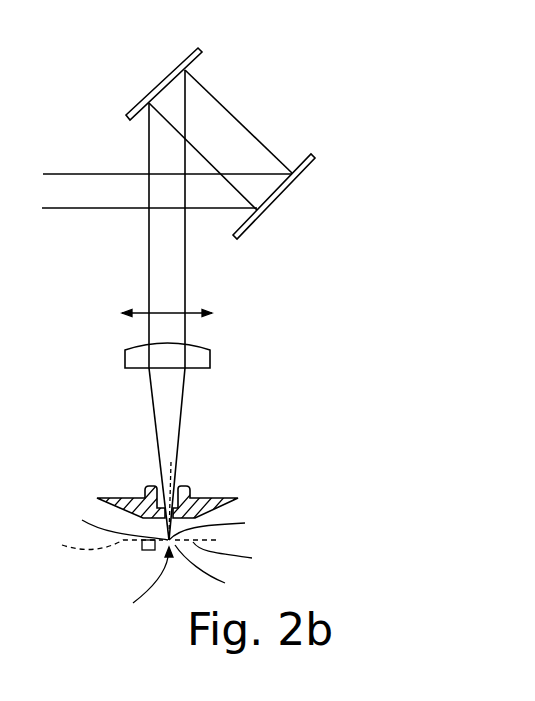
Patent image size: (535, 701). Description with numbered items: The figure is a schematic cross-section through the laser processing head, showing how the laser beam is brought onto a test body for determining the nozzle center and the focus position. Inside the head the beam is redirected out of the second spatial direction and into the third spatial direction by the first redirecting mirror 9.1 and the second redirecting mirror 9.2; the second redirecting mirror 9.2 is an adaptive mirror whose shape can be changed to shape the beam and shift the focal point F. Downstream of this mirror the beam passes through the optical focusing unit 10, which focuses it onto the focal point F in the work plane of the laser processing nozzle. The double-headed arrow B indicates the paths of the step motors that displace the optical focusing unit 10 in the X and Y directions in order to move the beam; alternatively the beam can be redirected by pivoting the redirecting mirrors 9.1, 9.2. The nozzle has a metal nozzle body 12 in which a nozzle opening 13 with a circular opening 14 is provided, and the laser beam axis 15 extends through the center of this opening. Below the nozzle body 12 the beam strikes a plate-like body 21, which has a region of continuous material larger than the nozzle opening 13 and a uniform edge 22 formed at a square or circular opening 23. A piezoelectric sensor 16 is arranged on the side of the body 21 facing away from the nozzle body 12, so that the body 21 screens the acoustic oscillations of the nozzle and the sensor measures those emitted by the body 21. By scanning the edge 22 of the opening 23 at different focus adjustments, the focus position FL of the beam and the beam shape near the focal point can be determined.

The second redirecting mirror 9.2 is at (170, 75).
The first redirecting mirror 9.1 is at (272, 207).
The double-headed arrow B is at (168, 313).
The optical focusing unit 10 is at (130, 357).
The nozzle opening 13 is at (162, 486).
The laser beam axis 15 is at (176, 474).
The nozzle body 12 is at (217, 498).
The focal point F is at (117, 520).
The focus position FL is at (125, 546).
The circular opening 14 is at (223, 524).
The plate-like body 21 is at (240, 557).
The uniform edge 22 is at (217, 574).
The piezoelectric sensor 16 is at (148, 550).
The opening 23 is at (137, 587).